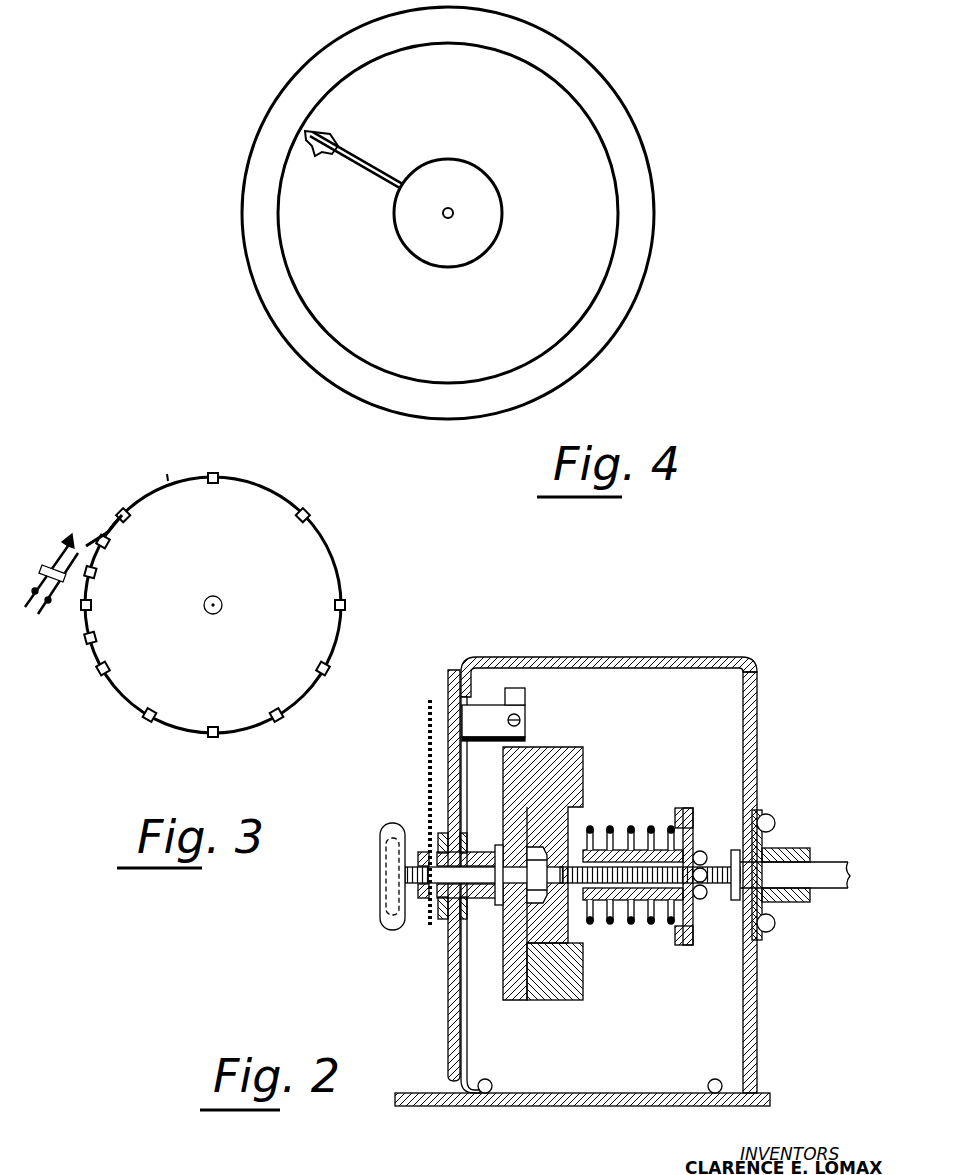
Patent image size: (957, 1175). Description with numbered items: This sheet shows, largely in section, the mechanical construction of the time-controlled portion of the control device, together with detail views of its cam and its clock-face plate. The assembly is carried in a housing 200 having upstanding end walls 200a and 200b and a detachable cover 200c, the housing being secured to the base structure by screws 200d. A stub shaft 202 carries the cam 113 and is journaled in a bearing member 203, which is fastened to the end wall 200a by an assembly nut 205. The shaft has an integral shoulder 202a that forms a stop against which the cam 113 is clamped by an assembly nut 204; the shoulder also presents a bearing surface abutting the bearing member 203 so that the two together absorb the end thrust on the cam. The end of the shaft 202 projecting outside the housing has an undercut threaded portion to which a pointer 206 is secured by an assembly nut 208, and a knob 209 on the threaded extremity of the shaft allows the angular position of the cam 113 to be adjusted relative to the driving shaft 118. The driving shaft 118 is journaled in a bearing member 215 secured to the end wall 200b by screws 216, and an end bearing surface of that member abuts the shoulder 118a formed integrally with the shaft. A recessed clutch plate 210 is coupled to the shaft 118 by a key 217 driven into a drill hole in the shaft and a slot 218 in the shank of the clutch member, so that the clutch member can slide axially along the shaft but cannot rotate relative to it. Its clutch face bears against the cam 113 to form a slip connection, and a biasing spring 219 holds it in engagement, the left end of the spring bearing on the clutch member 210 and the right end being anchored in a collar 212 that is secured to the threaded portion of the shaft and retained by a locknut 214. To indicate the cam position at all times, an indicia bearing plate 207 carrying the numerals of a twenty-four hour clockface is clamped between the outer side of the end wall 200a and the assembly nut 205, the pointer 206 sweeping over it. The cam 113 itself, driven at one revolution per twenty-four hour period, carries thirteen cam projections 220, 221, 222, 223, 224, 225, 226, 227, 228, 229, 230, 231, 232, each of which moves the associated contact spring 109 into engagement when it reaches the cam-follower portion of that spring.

In FIG. 3, the contact spring 109 is at (42, 560).
In FIG. 2, the contact spring 109 is at (525, 727).
In FIG. 3, the cam 113 is at (322, 553).
In FIG. 2, the cam 113 is at (527, 1000).
In FIG. 2, the driving shaft 118 is at (830, 862).
In FIG. 2, the shoulder 118a is at (737, 900).
In FIG. 2, the housing 200 is at (598, 881).
In FIG. 2, the end wall 200a is at (466, 1032).
In FIG. 2, the end wall 200b is at (743, 1020).
In FIG. 2, the detachable cover 200c is at (612, 668).
In FIG. 2, the screws 200d is at (489, 1080).
In FIG. 4, the stub shaft 202 is at (450, 210).
In FIG. 2, the stub shaft 202 is at (475, 845).
In FIG. 2, the shoulder 202a is at (497, 905).
In FIG. 2, the bearing member 203 is at (478, 900).
In FIG. 2, the assembly nut 204 is at (540, 850).
In FIG. 2, the assembly nut 205 is at (442, 920).
In FIG. 4, the pointer 206 is at (349, 157).
In FIG. 2, the pointer 206 is at (428, 730).
In FIG. 4, the indicia bearing plate 207 is at (644, 276).
In FIG. 2, the indicia bearing plate 207 is at (448, 978).
In FIG. 2, the assembly nut 208 is at (422, 898).
In FIG. 4, the knob 209 is at (484, 254).
In FIG. 2, the knob 209 is at (380, 886).
In FIG. 2, the clutch plate 210 is at (583, 965).
In FIG. 2, the collar 212 is at (692, 942).
In FIG. 2, the locknut 214 is at (700, 851).
In FIG. 2, the bearing member 215 is at (780, 848).
In FIG. 2, the screws 216 is at (772, 818).
In FIG. 2, the key 217 is at (610, 848).
In FIG. 2, the slot 218 is at (588, 848).
In FIG. 2, the biasing spring 219 is at (616, 926).
In FIG. 3, the cam projection 220 is at (101, 545).
In FIG. 3, the cam projection 221 is at (91, 575).
In FIG. 3, the cam projection 222 is at (87, 608).
In FIG. 3, the cam projection 223 is at (92, 641).
In FIG. 3, the cam projection 224 is at (103, 674).
In FIG. 3, the cam projection 225 is at (150, 720).
In FIG. 3, the cam projection 226 is at (219, 736).
In FIG. 3, the cam projection 227 is at (283, 720).
In FIG. 3, the cam projection 228 is at (330, 671).
In FIG. 3, the cam projection 229 is at (345, 604).
In FIG. 3, the cam projection 230 is at (305, 514).
In FIG. 3, the cam projection 231 is at (216, 476).
In FIG. 3, the cam projection 232 is at (120, 512).